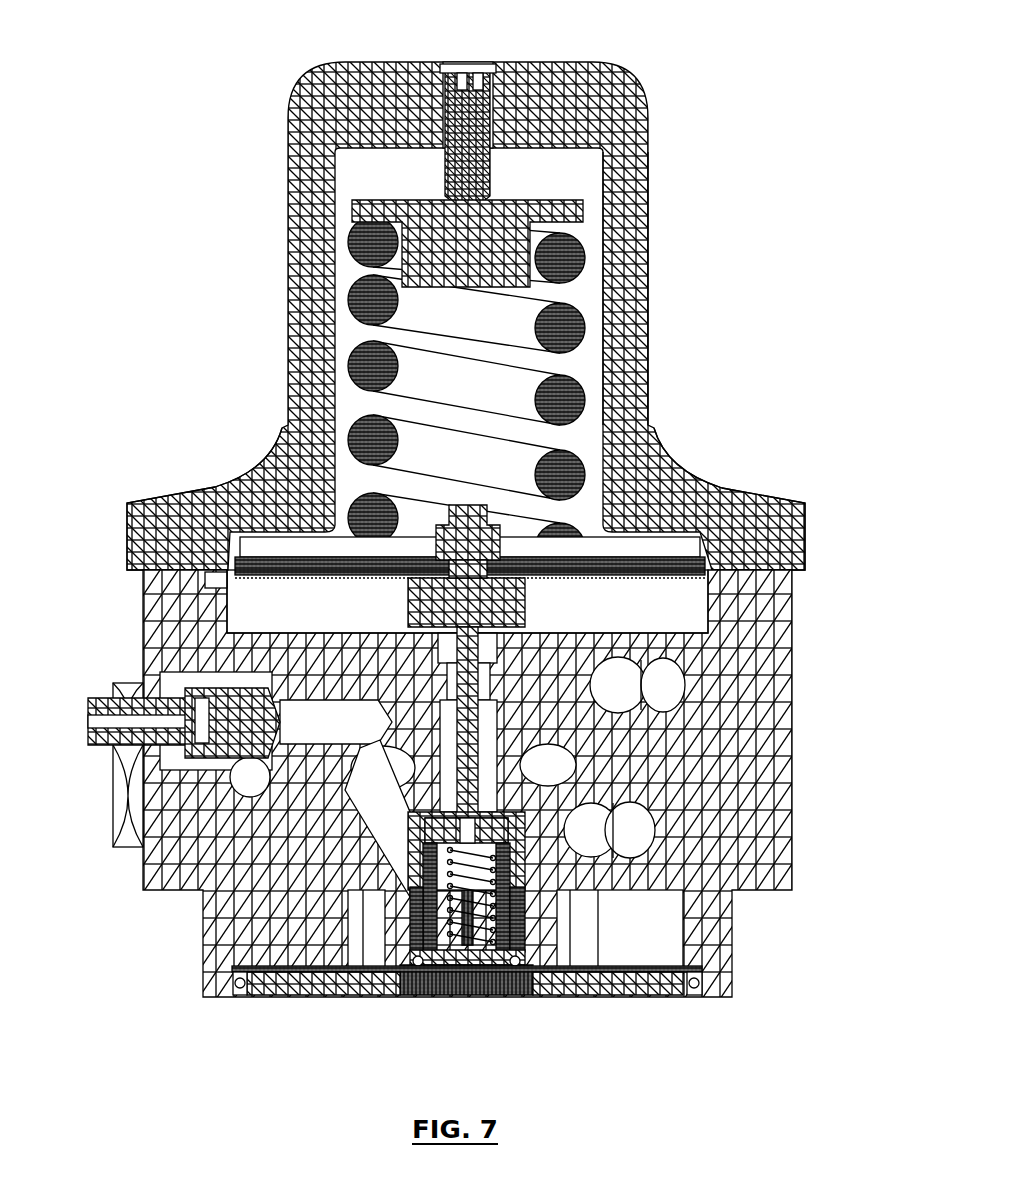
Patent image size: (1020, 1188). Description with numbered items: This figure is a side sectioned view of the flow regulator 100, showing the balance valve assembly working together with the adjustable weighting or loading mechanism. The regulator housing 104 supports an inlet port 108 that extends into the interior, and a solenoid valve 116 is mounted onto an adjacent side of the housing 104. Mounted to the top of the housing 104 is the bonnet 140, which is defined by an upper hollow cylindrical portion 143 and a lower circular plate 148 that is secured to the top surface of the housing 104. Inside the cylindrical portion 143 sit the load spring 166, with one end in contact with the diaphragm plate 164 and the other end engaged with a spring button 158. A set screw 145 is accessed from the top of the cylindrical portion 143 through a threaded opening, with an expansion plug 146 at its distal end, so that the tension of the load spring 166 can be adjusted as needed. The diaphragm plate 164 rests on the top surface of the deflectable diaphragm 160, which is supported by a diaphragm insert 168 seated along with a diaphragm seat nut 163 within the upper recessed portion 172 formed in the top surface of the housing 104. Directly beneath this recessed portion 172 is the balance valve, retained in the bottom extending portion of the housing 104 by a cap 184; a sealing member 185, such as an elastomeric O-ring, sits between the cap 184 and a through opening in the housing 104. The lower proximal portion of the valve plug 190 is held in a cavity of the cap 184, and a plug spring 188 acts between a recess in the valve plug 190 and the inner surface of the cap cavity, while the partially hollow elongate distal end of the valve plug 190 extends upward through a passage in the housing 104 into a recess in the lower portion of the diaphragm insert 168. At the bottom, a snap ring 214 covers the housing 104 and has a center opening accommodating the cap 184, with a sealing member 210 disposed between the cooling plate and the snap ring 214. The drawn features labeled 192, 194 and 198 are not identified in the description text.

The flow regulator 100 is at (806, 56).
The regulator housing 104 is at (752, 790).
The inlet port 108 is at (114, 788).
The solenoid valve 116 is at (128, 705).
The bonnet 140 is at (288, 266).
The upper hollow cylindrical portion 143 is at (640, 352).
The set screw 145 is at (468, 150).
The expansion plug 146 is at (470, 66).
The lower circular plate 148 is at (785, 560).
The spring button 158 is at (378, 212).
The diaphragm 160 is at (210, 516).
The diaphragm seat nut 163 is at (490, 535).
The diaphragm plate 164 is at (658, 560).
The load spring 166 is at (373, 364).
The diaphragm insert 168 is at (408, 606).
The upper recessed portion 172 is at (688, 618).
The cap 184 is at (470, 983).
The sealing member 185 is at (413, 880).
The plug spring 188 is at (473, 927).
The valve plug 190 is at (523, 878).
The orifice 192 is at (492, 822).
The valve seat 194 is at (530, 908).
The outlet passage 198 is at (352, 900).
The sealing member 210 is at (697, 997).
The snap ring 214 is at (287, 993).